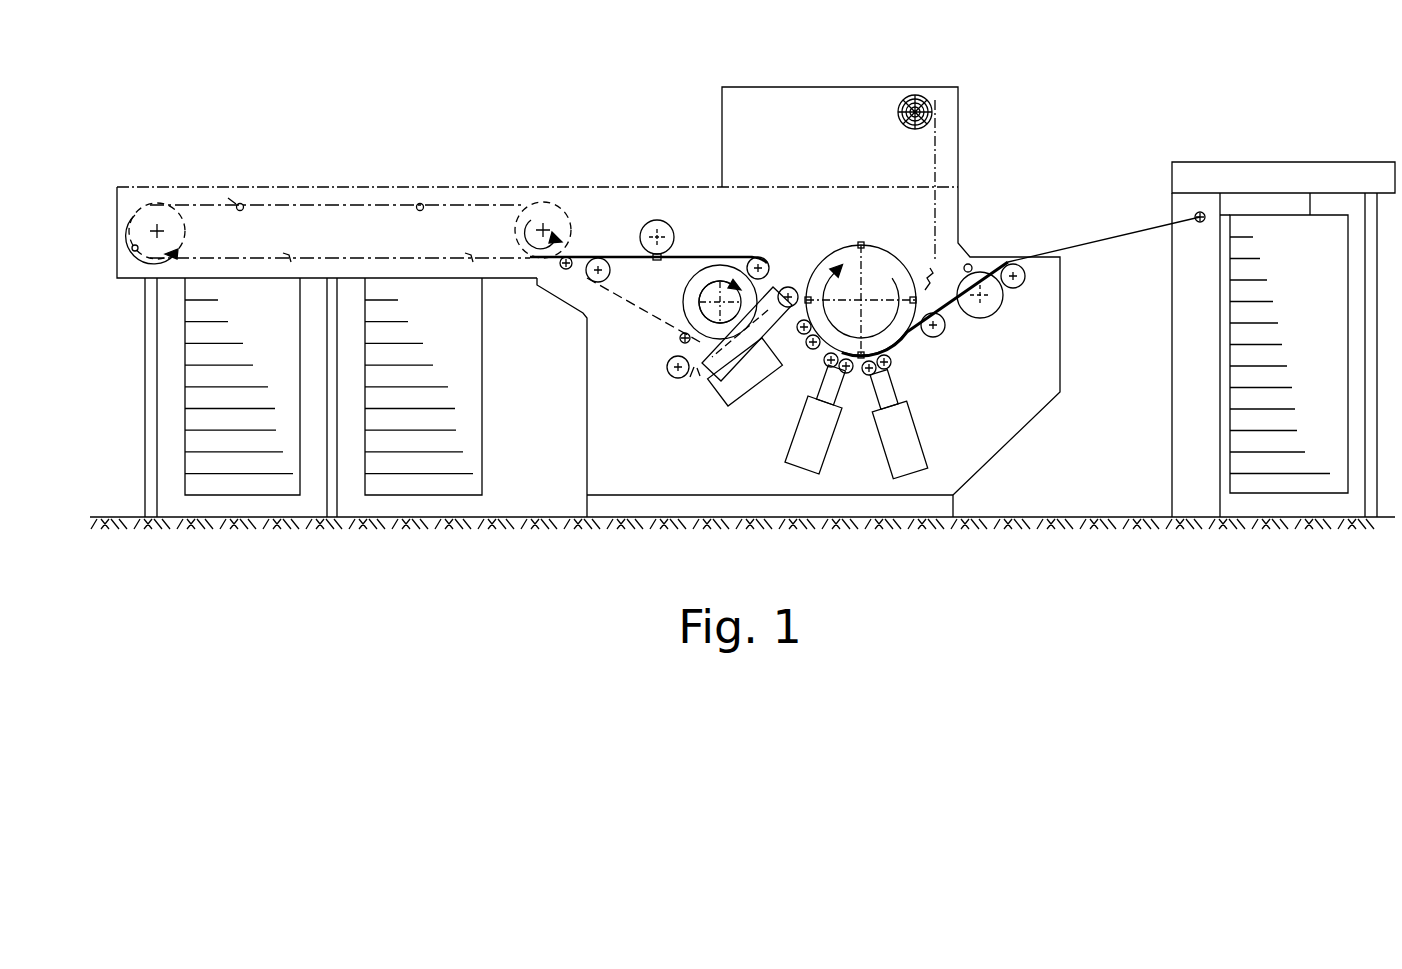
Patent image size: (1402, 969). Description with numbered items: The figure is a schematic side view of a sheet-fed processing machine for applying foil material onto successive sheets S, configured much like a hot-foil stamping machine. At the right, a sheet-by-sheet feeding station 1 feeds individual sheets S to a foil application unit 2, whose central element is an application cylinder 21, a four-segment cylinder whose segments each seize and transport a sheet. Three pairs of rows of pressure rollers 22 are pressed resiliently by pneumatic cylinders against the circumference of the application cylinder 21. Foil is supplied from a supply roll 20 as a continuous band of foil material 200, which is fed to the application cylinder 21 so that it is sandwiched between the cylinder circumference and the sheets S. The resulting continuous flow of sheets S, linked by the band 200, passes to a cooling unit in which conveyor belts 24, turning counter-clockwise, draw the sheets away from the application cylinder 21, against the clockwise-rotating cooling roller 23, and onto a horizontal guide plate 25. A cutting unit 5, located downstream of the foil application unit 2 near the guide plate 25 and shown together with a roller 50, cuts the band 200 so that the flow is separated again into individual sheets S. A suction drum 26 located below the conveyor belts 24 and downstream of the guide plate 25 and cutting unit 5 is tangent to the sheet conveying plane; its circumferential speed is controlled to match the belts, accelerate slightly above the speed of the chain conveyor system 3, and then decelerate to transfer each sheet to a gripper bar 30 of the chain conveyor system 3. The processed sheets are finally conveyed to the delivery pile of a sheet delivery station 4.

The sheet-by-sheet feeding station 1 is at (1281, 153).
The foil application unit 2 is at (976, 182).
The chain conveyor system 3 is at (512, 204).
The sheet delivery station 4 is at (268, 538).
The cutting unit 5 is at (657, 222).
The supply roll 20 is at (898, 110).
The application cylinder 21 is at (822, 262).
The pressure rollers 22 is at (838, 376).
The cooling roller 23 is at (697, 310).
The conveyor belts 24 is at (703, 380).
The horizontal guide plate 25 is at (758, 257).
The suction drum 26 is at (596, 272).
The gripper bars 30 is at (292, 254).
The roller 50 is at (643, 230).
The continuous band of foil material 200 is at (934, 160).
The sheets S is at (1310, 215).